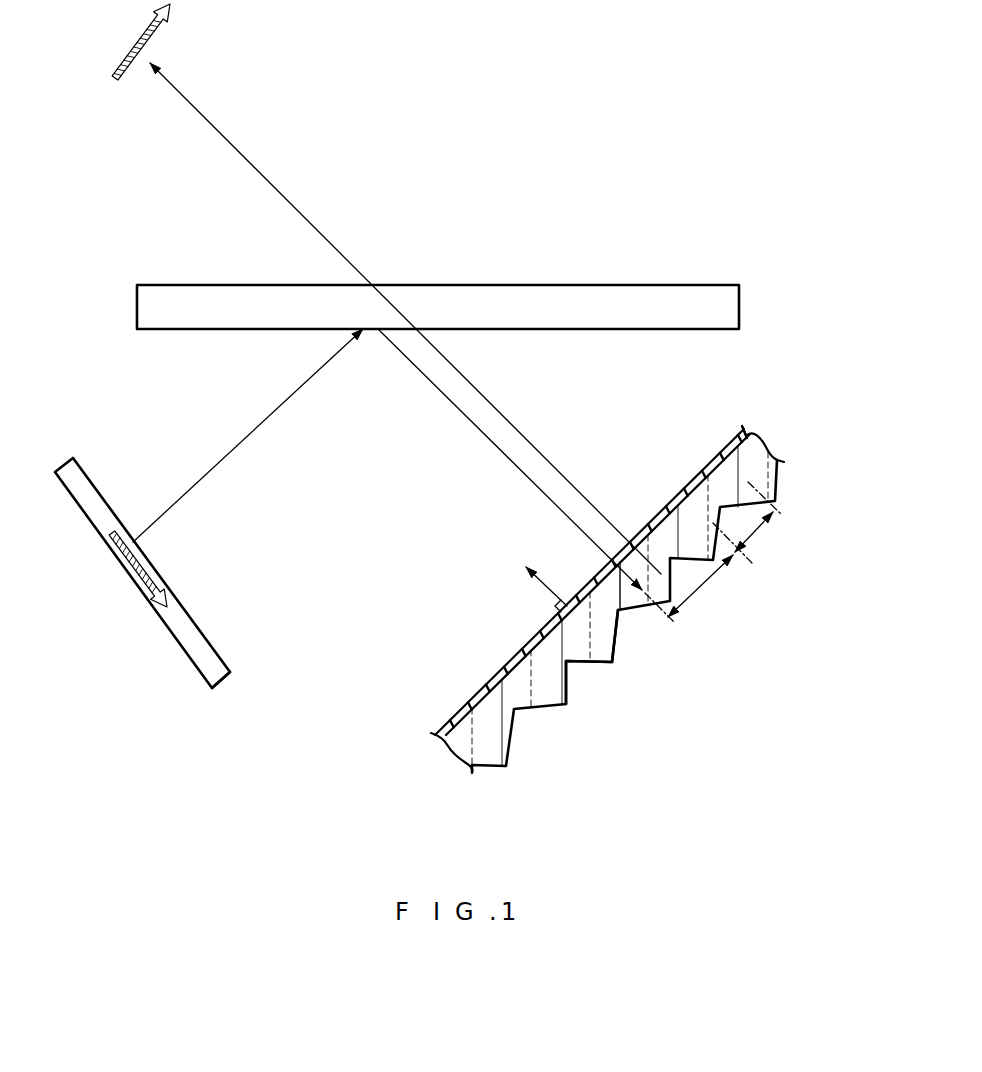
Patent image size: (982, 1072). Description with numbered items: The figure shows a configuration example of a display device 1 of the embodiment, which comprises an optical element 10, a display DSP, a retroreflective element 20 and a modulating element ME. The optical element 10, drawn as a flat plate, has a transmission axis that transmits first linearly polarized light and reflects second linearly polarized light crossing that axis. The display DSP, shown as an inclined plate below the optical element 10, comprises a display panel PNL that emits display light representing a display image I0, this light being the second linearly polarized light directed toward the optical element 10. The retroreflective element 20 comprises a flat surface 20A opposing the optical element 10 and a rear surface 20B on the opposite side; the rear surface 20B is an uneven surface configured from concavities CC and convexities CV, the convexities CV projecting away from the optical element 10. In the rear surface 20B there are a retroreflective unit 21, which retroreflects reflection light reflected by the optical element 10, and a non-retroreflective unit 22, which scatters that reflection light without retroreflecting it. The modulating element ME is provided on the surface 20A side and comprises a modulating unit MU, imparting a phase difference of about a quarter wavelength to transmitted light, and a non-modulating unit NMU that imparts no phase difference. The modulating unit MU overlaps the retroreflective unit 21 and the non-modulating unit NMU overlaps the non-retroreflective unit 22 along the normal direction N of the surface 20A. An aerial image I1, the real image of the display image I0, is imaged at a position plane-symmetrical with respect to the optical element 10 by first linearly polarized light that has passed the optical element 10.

The display device 1 is at (550, 176).
The optical element 10 is at (732, 310).
The retroreflective element 20 is at (628, 629).
The surface 20A is at (505, 666).
The rear surface 20B is at (509, 778).
The retroreflective unit 21 is at (700, 587).
The non-retroreflective unit 22 is at (757, 530).
The modulating element ME is at (747, 435).
The modulating unit MU is at (650, 522).
The non-modulating unit NMU is at (698, 479).
The concavities CC is at (574, 670).
The convexities CV is at (622, 670).
The normal direction N is at (535, 582).
The display image I0 is at (164, 586).
The aerial image I1 is at (158, 28).
The display DSP is at (162, 676).
The display panel PNL is at (217, 676).